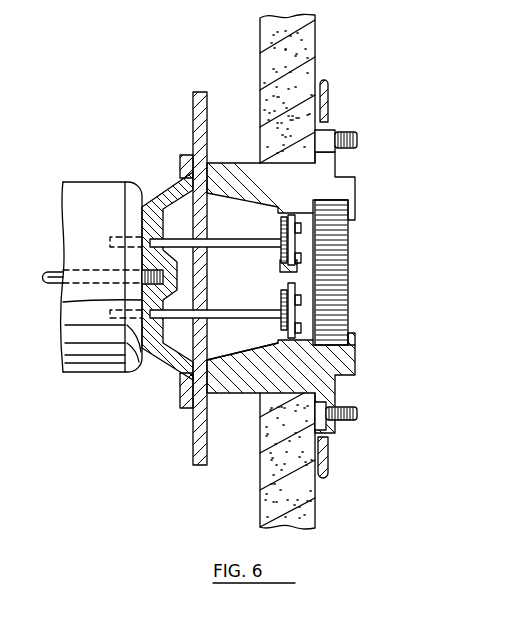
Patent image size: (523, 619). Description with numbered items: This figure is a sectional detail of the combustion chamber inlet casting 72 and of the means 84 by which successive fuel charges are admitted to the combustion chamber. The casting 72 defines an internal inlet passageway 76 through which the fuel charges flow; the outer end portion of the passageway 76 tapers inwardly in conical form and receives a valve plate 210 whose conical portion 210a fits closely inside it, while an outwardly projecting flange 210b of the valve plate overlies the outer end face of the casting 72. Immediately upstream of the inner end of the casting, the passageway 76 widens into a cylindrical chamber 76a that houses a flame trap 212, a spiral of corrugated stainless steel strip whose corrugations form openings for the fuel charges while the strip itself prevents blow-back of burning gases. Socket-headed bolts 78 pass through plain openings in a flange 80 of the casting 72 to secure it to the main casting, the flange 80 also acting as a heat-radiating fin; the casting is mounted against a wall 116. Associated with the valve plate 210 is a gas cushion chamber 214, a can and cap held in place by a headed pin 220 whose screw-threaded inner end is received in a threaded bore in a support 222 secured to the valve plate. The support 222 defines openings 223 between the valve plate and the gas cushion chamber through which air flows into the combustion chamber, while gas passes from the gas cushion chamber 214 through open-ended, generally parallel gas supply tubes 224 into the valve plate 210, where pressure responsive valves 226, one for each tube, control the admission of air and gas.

The wall 116 is at (247, 62).
The combustion chamber inlet casting 72 is at (345, 169).
The inlet passageway 76 is at (241, 385).
The cylindrical chamber 76a is at (330, 345).
The flame trap 212 is at (362, 253).
The flange 80 is at (336, 128).
The socket-headed bolts 78 is at (357, 141).
The means for admitting successive fuel charges 84 is at (226, 173).
The valve plate 210 is at (187, 455).
The conical portion 210a is at (222, 362).
The outwardly projecting flange 210b is at (190, 433).
The openings 223 is at (160, 210).
The gas cushion chamber 214 is at (94, 198).
The pin 220 is at (52, 274).
The support 222 is at (66, 300).
The gas supply tubes 224 is at (222, 310).
The pressure responsive valves 226 is at (270, 290).